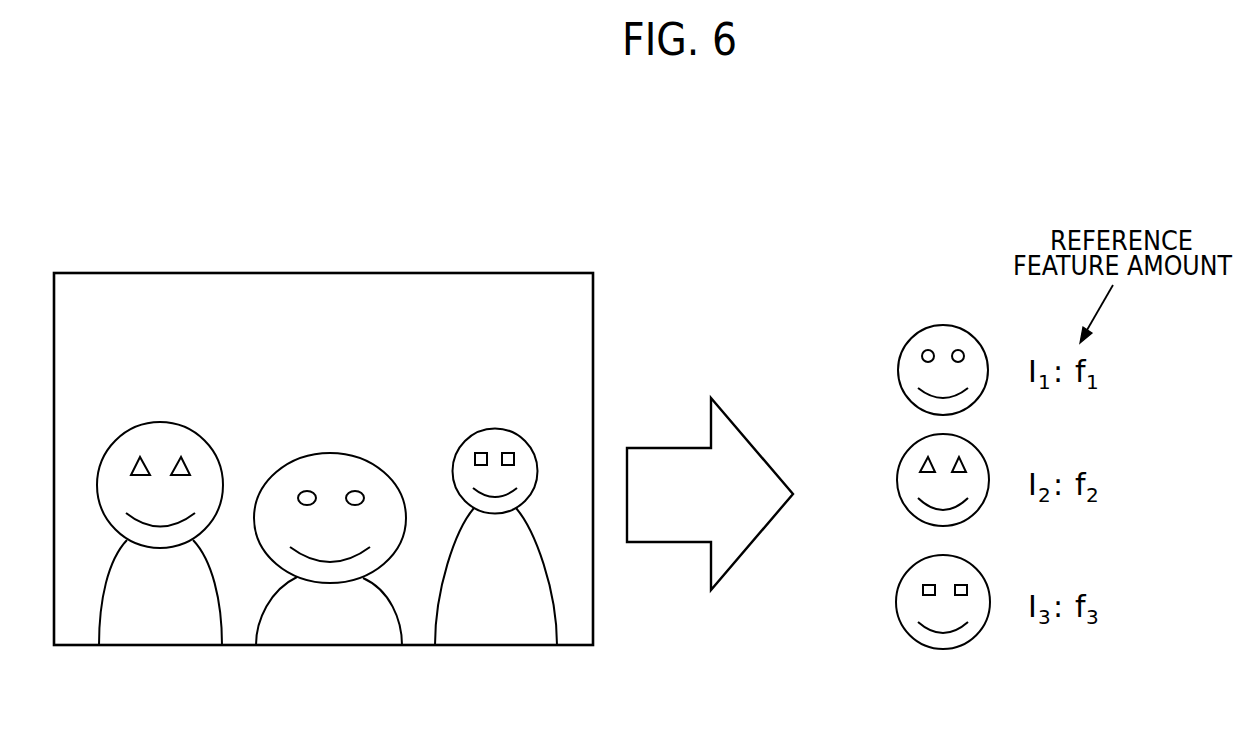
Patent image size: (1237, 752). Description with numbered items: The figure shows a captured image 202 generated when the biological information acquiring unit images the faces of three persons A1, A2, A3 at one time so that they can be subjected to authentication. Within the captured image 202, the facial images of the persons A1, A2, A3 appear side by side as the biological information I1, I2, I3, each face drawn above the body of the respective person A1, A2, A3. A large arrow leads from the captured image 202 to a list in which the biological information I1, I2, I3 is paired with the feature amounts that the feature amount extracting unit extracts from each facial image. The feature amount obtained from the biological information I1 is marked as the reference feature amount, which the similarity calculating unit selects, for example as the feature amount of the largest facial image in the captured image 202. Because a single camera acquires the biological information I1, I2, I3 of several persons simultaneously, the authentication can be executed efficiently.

The captured image 202 is at (513, 273).
The biological information I1 is at (322, 453).
The biological information I2 is at (158, 422).
The biological information I3 is at (490, 428).
The person A1 is at (333, 633).
The person A2 is at (162, 633).
The person A3 is at (498, 633).